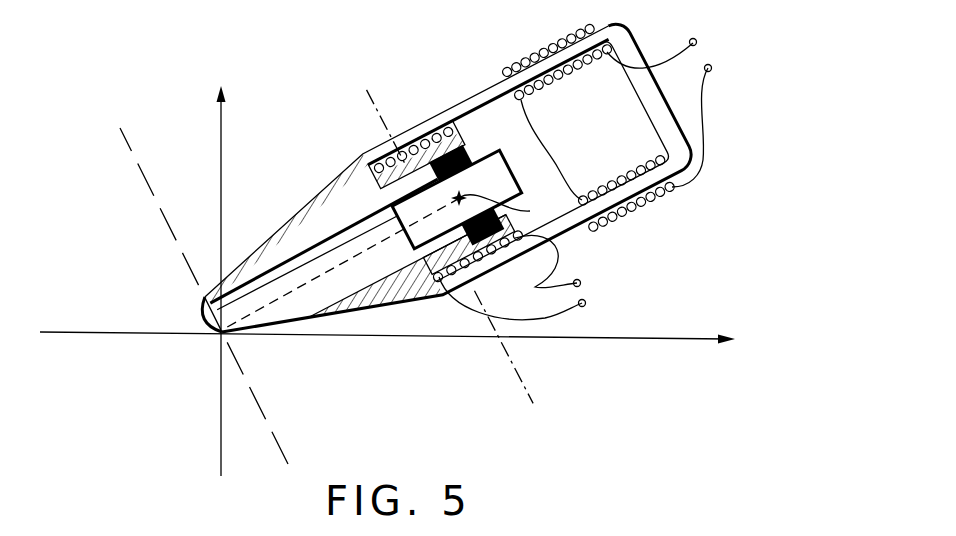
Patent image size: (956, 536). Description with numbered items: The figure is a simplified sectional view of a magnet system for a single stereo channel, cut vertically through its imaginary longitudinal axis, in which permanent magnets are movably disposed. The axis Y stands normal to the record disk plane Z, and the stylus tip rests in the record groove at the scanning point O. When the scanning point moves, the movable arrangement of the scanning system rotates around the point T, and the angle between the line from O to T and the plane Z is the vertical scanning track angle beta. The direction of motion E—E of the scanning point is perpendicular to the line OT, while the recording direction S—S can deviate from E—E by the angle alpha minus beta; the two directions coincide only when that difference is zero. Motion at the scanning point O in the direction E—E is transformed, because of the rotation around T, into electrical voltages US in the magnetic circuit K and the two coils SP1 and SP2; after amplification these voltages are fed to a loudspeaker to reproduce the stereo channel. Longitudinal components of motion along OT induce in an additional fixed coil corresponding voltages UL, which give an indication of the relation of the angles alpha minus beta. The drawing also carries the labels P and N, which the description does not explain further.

The axis Y is at (223, 266).
The record disk plane Z is at (387, 351).
The scanning point O is at (209, 328).
The direction of motion E— E is at (202, 295).
The P axis (pivot axis) P is at (452, 249).
The magnetic circuit K is at (500, 100).
The north pole of magnet N is at (452, 190).
The recording direction S— S is at (477, 207).
The rotation point T is at (503, 207).
The first coil SP1 is at (553, 105).
The second coil SP2 is at (626, 195).
The electrical voltages US is at (670, 111).
The voltages UL is at (527, 277).